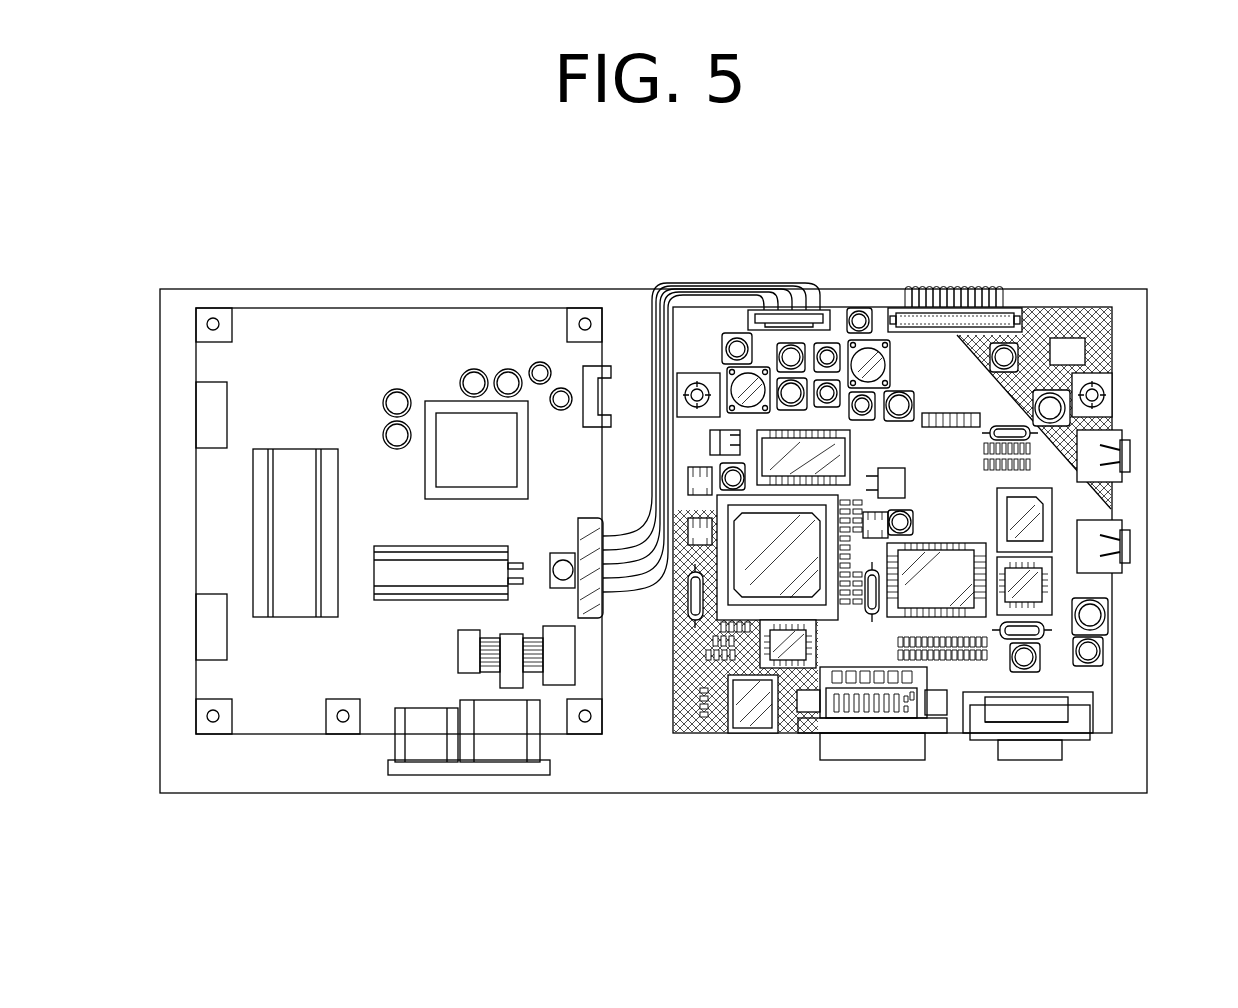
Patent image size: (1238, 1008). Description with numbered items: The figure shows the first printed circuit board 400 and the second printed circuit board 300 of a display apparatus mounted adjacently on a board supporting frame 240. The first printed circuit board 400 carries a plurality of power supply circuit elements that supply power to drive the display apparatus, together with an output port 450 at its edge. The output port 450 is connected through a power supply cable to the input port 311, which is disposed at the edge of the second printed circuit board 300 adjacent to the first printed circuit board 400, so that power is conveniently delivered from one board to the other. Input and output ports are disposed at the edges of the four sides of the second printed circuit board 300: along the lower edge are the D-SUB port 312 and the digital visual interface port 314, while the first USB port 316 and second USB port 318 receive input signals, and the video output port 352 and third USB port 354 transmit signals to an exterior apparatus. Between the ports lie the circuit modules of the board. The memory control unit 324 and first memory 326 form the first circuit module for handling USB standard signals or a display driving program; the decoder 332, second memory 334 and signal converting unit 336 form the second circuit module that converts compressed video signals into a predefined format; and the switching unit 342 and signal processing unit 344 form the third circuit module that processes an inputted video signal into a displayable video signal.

The board supporting frame 240 is at (160, 740).
The first printed circuit board 400 is at (290, 735).
The output port 450 is at (600, 608).
The second printed circuit board 300 is at (1087, 307).
The input port 311 is at (827, 307).
The second memory 334 is at (798, 453).
The video output port 352 is at (995, 320).
The third USB port 354 is at (1125, 462).
The memory control unit 324 is at (1032, 513).
The second USB port 318 is at (1125, 548).
The first memory 326 is at (958, 582).
The signal processing unit 344 is at (1018, 588).
The decoder 332 is at (703, 605).
The first USB port 316 is at (760, 712).
The signal converting unit 336 is at (795, 652).
The switching unit 342 is at (862, 660).
The digital visual interface (DVI) port 314 is at (905, 748).
The D-SUB port 312 is at (1070, 735).